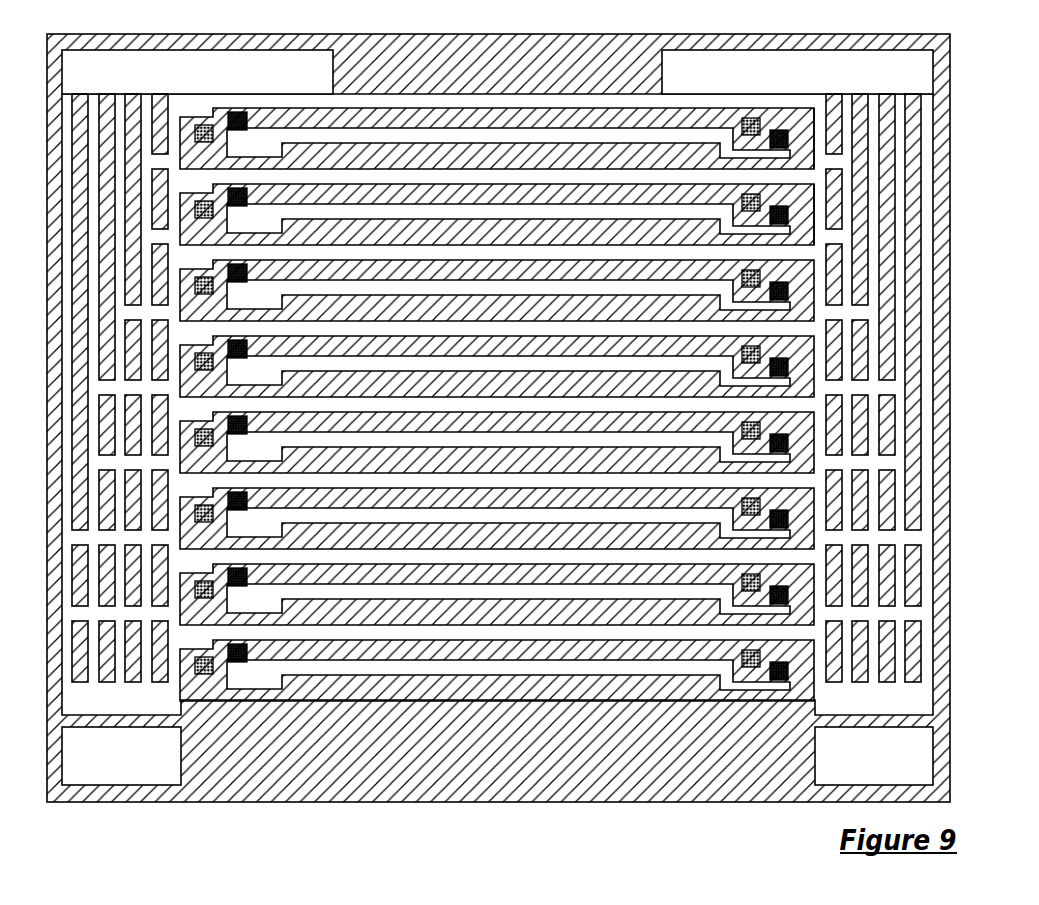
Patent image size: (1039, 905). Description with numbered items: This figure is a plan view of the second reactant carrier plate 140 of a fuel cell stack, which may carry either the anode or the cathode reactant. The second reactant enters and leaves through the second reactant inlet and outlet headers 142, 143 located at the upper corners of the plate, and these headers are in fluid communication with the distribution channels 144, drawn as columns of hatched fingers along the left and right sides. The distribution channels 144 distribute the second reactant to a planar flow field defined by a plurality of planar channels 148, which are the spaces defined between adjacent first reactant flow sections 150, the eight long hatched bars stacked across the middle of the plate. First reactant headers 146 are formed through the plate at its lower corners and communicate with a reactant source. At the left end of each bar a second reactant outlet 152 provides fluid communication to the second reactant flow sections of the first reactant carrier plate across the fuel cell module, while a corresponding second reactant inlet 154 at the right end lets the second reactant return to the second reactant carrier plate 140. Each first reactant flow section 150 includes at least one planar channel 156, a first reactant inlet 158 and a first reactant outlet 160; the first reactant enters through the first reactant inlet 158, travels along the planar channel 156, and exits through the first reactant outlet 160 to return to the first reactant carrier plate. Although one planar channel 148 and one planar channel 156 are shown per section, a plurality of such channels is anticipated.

The second reactant carrier plate 140 is at (957, 130).
The second reactant inlet header 142 is at (87, 73).
The second reactant outlet header 143 is at (852, 81).
The distribution channels 144 is at (925, 405).
The first reactant headers 146 is at (128, 765).
The planar channels 148 is at (545, 628).
The first reactant flow sections 150 is at (818, 158).
The second reactant outlets 152 is at (197, 205).
The second reactant inlets 154 is at (743, 198).
The planar channel 156 is at (470, 663).
The first reactant inlet 158 is at (240, 198).
The first reactant outlet 160 is at (782, 208).